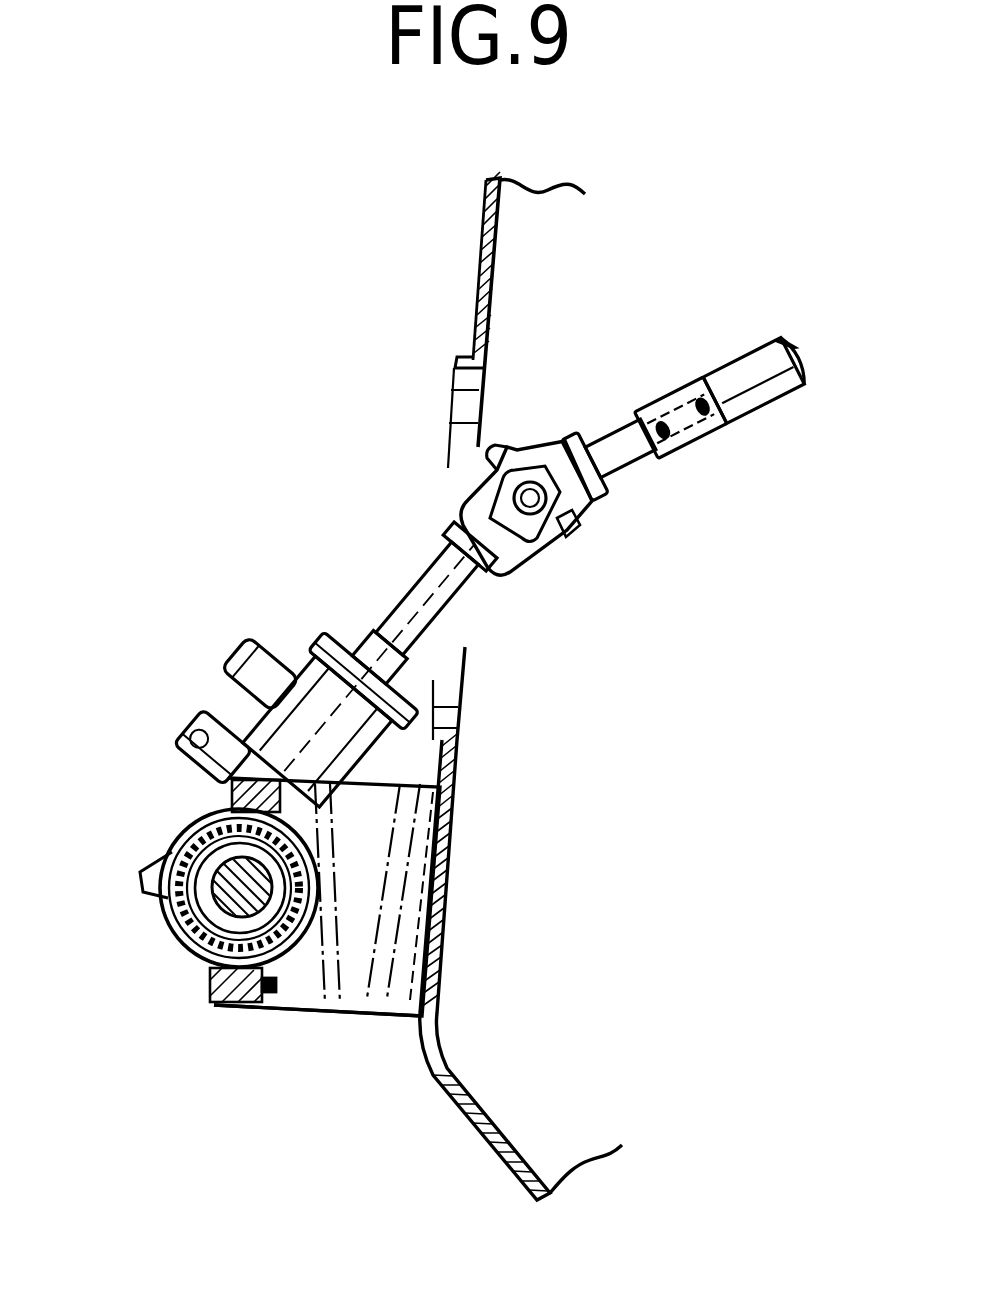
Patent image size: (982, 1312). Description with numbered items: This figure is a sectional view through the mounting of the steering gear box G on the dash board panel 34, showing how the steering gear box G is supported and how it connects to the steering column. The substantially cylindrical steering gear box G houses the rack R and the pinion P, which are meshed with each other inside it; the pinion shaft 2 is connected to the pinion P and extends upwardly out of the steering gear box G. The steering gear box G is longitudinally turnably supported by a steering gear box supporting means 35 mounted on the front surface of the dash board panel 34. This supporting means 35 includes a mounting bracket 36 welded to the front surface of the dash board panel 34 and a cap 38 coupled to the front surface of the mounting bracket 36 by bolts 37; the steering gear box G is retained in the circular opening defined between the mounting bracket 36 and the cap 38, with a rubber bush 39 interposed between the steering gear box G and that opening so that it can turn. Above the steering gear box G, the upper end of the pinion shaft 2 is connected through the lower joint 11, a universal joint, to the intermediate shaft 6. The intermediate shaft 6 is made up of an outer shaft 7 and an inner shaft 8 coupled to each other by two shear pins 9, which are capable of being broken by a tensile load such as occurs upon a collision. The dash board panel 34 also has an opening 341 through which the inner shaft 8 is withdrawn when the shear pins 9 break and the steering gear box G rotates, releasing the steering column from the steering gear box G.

The pinion shaft 2 is at (415, 606).
The intermediate shaft 6 is at (689, 445).
The outer shaft 7 is at (760, 412).
The inner shaft 8 is at (620, 448).
The shear pins 9 is at (681, 417).
The lower joint 11 is at (528, 484).
The dash board panel 34 is at (458, 1112).
The opening 341 is at (457, 373).
The steering gear box supporting means 35 is at (272, 1024).
The mounting bracket 36 is at (345, 1013).
The bolts 37 is at (210, 810).
The cap 38 is at (175, 958).
The rubber bushes 39 is at (172, 922).
The steering gear box G is at (211, 909).
The pinion P is at (288, 848).
The rack R is at (292, 921).